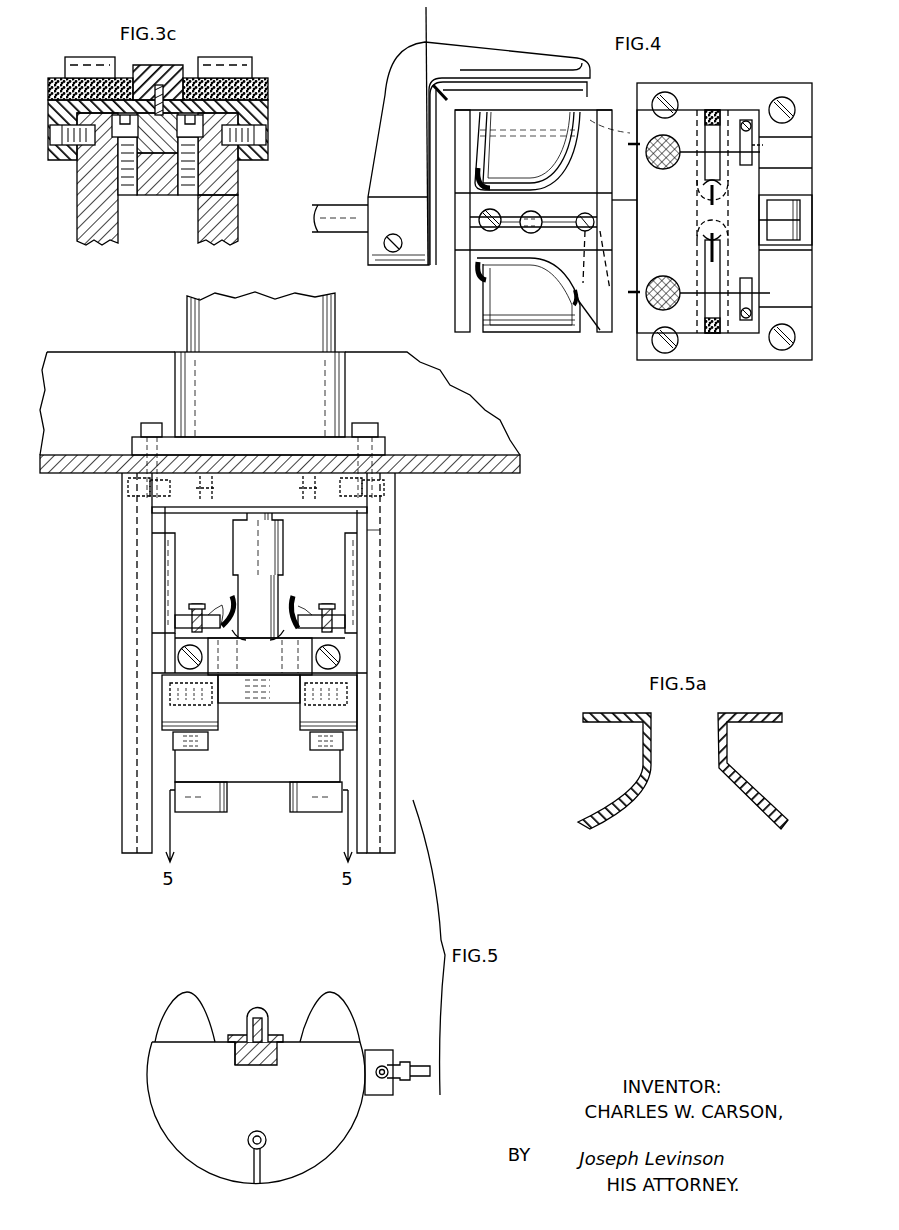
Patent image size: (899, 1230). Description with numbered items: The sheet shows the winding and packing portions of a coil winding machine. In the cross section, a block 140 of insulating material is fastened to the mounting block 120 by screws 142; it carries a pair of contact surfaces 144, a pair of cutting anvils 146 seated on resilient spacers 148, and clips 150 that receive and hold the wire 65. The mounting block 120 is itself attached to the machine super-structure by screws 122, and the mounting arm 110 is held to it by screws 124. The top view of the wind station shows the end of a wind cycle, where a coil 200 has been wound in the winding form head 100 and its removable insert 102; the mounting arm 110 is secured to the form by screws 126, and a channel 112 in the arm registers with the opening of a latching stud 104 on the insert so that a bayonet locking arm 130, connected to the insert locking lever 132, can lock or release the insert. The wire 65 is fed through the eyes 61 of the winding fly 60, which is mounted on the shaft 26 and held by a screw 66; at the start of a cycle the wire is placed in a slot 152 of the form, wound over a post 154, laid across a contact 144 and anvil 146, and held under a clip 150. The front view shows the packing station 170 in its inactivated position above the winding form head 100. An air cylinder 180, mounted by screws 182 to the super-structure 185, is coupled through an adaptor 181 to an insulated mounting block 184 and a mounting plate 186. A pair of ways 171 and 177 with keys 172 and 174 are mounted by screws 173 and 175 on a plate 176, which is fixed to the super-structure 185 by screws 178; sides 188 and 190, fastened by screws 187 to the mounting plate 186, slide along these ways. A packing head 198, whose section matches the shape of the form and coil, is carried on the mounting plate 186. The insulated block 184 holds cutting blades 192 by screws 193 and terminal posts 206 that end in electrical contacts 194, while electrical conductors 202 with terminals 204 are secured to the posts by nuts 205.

In FIG. 4, the shaft 26 is at (342, 205).
In FIG. 4, the winding fly 60 is at (393, 108).
In FIG. 5, the winding fly 60 is at (413, 1068).
In FIG. 4, the eyes 61 is at (447, 86).
In FIG. 4, the wire 65 is at (427, 22).
In FIG. 4, the screw 66 is at (394, 253).
In FIG. 4, the winding form head 100 is at (600, 330).
In FIG. 5, the winding form head 100 is at (148, 1082).
In FIG. 4, the removable insert 102 is at (500, 322).
In FIG. 5, the removable insert 102 is at (197, 1003).
In FIG. 4, the latching stud 104 is at (535, 233).
In FIG. 5, the latching stud 104 is at (262, 1012).
In FIG. 3C, the mounting arm 110 is at (215, 150).
In FIG. 4, the mounting arm 110 is at (603, 203).
In FIG. 5, the mounting arm 110 is at (268, 1065).
In FIG. 4, the channel 112 is at (470, 220).
In FIG. 5, the channel 112 is at (250, 1060).
In FIG. 3C, the mounting block 120 is at (228, 205).
In FIG. 4, the mounting block 120 is at (692, 360).
In FIG. 4, the screws 122 is at (770, 105).
In FIG. 3C, the screws 124 is at (187, 195).
In FIG. 4, the screws 126 is at (580, 222).
In FIG. 3C, the bayonet locking arm 130 is at (158, 82).
In FIG. 4, the bayonet locking arm 130 is at (625, 218).
In FIG. 5, the bayonet locking arm 130 is at (252, 1028).
In FIG. 4, the insert locking lever 132 is at (790, 203).
In FIG. 3C, the block of insulating material 140 is at (268, 113).
In FIG. 4, the block of insulating material 140 is at (642, 330).
In FIG. 3C, the screws 142 is at (268, 136).
In FIG. 4, the contact surfaces 144 is at (663, 170).
In FIG. 3C, the cutting anvils 146 is at (90, 60).
In FIG. 4, the cutting anvils 146 is at (710, 192).
In FIG. 3C, the resilient spacers 148 is at (55, 80).
In FIG. 4, the resilient spacers 148 is at (718, 243).
In FIG. 4, the clips 150 is at (752, 142).
In FIG. 4, the slot 152 is at (595, 252).
In FIG. 5, the slot 152 is at (262, 1162).
In FIG. 4, the post 154 is at (632, 146).
In FIG. 5, the packing station 170 is at (70, 616).
In FIG. 5, the way 171 is at (122, 545).
In FIG. 5, the key 172 is at (152, 520).
In FIG. 5, the screws 173 is at (128, 498).
In FIG. 5, the key 174 is at (360, 521).
In FIG. 5, the screws 175 is at (395, 496).
In FIG. 5, the plate 176 is at (292, 513).
In FIG. 5, the way 177 is at (395, 547).
In FIG. 5, the screws 178 is at (308, 455).
In FIG. 5, the air cylinder 180 is at (193, 330).
In FIG. 5, the adaptor 181 is at (242, 548).
In FIG. 5, the screws 182 is at (148, 423).
In FIG. 5, the insulated mounting block 184 is at (162, 660).
In FIG. 5, the super-structure 185 is at (433, 455).
In FIG. 5, the mounting plate 186 is at (240, 698).
In FIG. 5, the screws 187 is at (162, 692).
In FIG. 5, the side 188 is at (152, 565).
In FIG. 5, the side 190 is at (360, 570).
In FIG. 5, the cutting blades 192 is at (162, 714).
In FIG. 5, the screws 193 is at (178, 652).
In FIG. 5, the electrical contacts 194 is at (208, 750).
In FIG. 5, the packing head 198 is at (290, 800).
In FIG. 5A, the packing head 198 is at (725, 792).
In FIG. 4, the coil 200 is at (488, 183).
In FIG. 5, the electrical conductors 202 is at (240, 600).
In FIG. 5, the terminals 204 is at (274, 642).
In FIG. 5, the nuts 205 is at (345, 628).
In FIG. 5, the terminal posts 206 is at (198, 604).